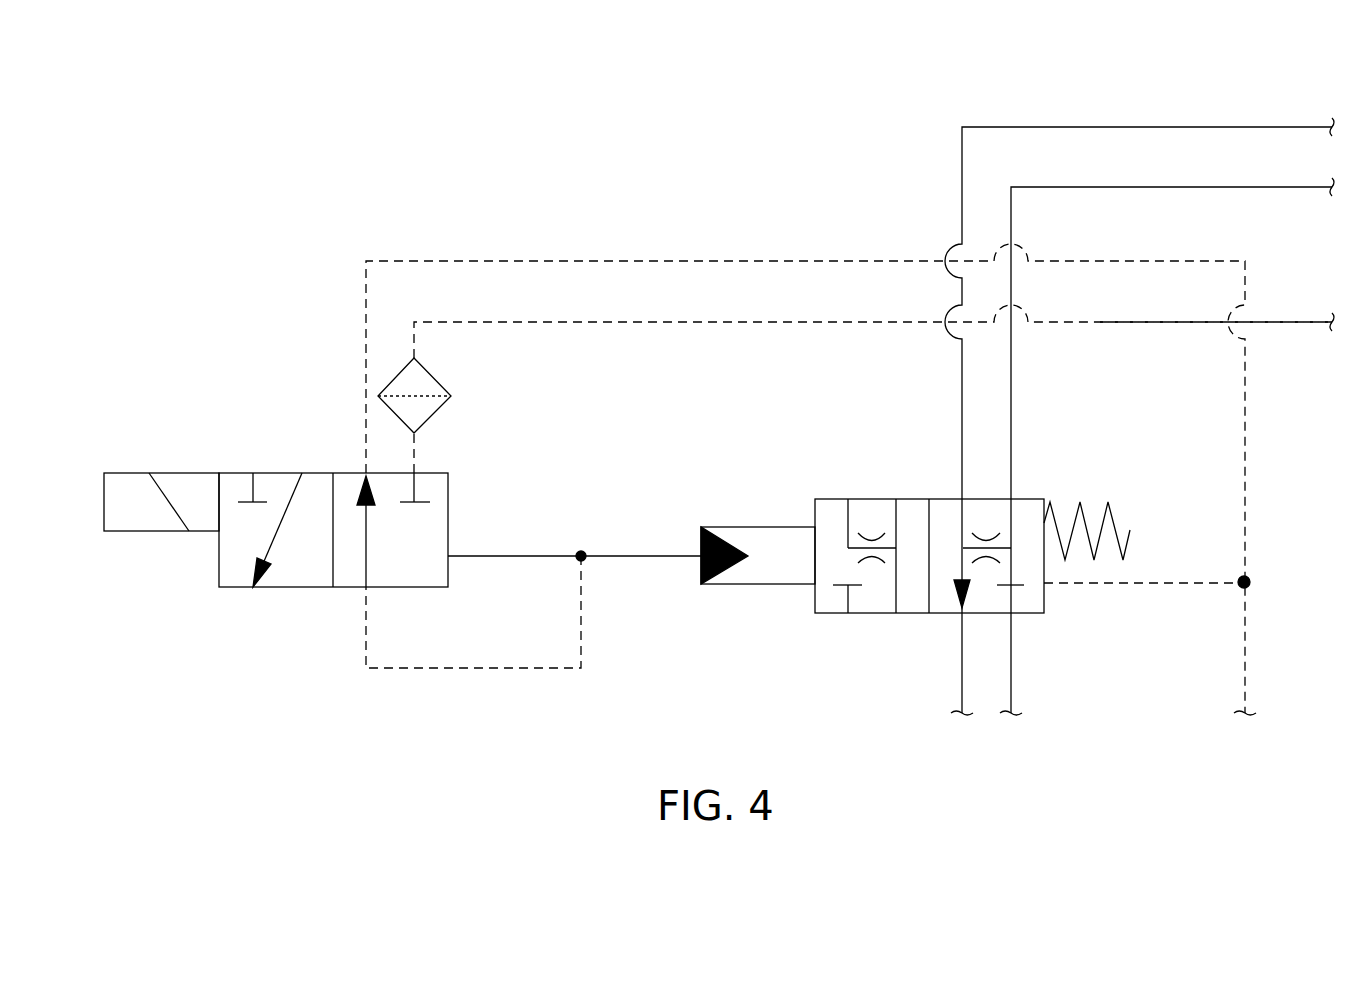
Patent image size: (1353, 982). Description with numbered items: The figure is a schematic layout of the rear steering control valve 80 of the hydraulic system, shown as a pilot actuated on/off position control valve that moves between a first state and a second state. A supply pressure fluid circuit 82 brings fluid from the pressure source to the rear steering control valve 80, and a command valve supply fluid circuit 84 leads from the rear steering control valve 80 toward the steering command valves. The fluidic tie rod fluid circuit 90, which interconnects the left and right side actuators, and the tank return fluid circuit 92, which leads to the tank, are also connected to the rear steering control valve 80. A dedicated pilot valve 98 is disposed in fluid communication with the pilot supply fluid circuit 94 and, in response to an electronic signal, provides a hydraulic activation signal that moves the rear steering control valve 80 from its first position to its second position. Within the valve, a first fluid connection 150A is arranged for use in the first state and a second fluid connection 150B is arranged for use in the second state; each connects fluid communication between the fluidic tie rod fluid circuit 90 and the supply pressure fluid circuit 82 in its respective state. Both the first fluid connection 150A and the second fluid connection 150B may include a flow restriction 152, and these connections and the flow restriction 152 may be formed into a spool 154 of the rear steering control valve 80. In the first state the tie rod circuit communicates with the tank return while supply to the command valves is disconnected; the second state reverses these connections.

The rear steering control valve 80 is at (855, 482).
The supply pressure fluid circuit 82 is at (1282, 187).
The command valve supply fluid circuit 84 is at (1011, 674).
The fluidic tie rod fluid circuit 90 is at (1277, 127).
The tank return fluid circuit 92 is at (962, 688).
The pilot supply fluid circuit 94 is at (1293, 322).
The pilot valve 98 is at (275, 473).
The first fluid connection 150A is at (1010, 548).
The second fluid connection 150B is at (848, 548).
The flow restriction 152 is at (868, 558).
The spool 154 is at (920, 499).